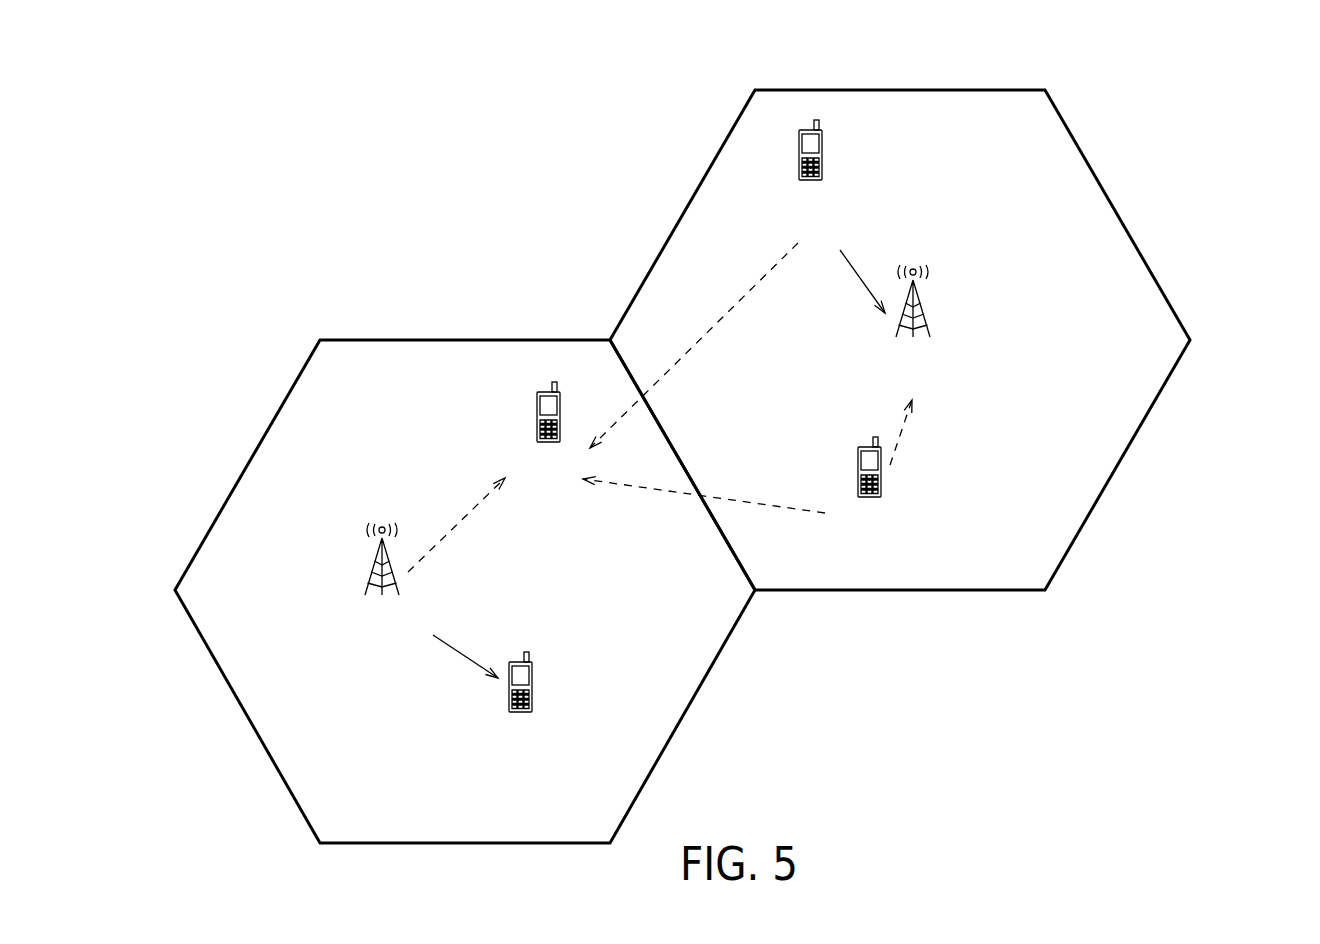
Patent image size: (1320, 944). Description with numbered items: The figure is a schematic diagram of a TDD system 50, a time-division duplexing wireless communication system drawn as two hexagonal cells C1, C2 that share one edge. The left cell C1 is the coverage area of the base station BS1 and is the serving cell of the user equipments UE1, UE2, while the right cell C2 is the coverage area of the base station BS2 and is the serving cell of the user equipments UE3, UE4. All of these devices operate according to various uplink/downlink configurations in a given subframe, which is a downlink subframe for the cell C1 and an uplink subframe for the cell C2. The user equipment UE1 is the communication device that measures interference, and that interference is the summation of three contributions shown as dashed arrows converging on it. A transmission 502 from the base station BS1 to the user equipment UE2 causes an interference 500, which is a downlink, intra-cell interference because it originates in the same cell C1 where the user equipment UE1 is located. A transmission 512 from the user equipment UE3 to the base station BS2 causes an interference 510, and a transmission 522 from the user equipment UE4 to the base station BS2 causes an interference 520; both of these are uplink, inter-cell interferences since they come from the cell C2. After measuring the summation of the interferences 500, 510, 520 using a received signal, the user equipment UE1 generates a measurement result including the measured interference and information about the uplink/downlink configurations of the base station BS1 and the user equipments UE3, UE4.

The TDD system 50 is at (1203, 138).
The cell C1 is at (463, 339).
The cell C2 is at (893, 88).
The base station BS1 is at (382, 597).
The base station BS2 is at (915, 340).
The user equipment UE1 is at (550, 445).
The user equipment UE2 is at (520, 714).
The user equipment UE3 is at (815, 182).
The user equipment UE4 is at (870, 498).
The interference 500 is at (460, 520).
The transmission 502 is at (463, 652).
The interference 510 is at (730, 312).
The transmission 512 is at (857, 270).
The interference 520 is at (733, 502).
The transmission 522 is at (902, 430).